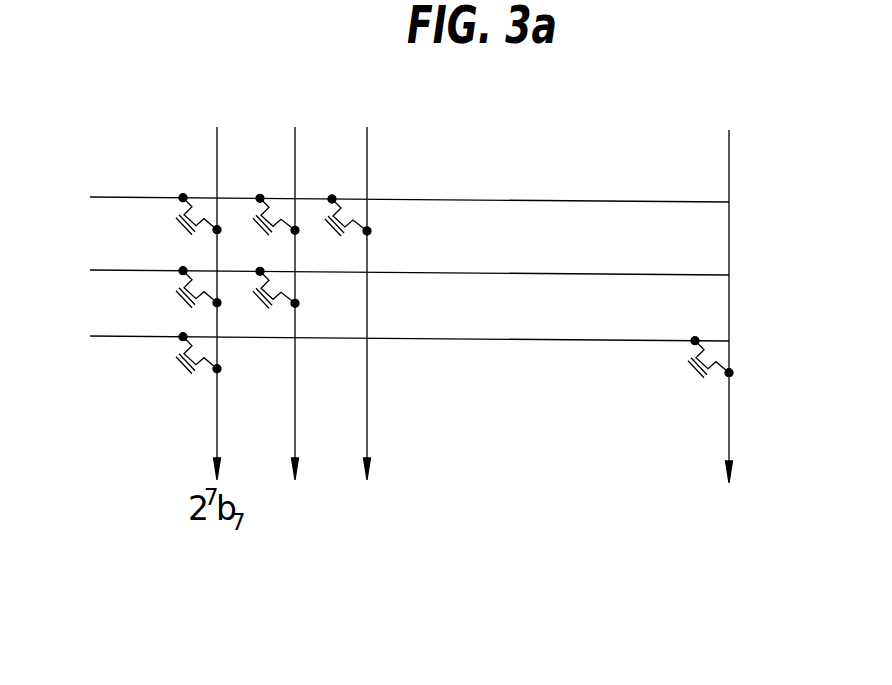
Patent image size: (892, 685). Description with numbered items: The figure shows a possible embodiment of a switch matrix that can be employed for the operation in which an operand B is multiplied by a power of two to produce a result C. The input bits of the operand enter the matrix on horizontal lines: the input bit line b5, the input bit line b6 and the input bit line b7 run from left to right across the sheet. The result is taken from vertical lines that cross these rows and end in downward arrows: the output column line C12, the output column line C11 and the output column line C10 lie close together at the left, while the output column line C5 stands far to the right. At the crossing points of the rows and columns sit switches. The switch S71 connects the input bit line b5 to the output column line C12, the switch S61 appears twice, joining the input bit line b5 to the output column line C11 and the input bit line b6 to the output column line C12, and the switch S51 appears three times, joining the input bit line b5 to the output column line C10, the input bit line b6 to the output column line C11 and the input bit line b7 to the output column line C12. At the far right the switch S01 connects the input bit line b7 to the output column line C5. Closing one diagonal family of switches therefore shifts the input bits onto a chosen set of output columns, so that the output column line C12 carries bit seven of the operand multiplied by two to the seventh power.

The input bit line b5 is at (393, 197).
The input bit line b6 is at (393, 272).
The input bit line b7 is at (393, 340).
The output column line C12 is at (220, 367).
The output column line C11 is at (296, 367).
The output column line C10 is at (370, 367).
The output column line C5 is at (731, 371).
The switch S71 is at (169, 222).
The switch S61 is at (208, 259).
The switch S51 is at (244, 292).
The switch S01 is at (681, 369).